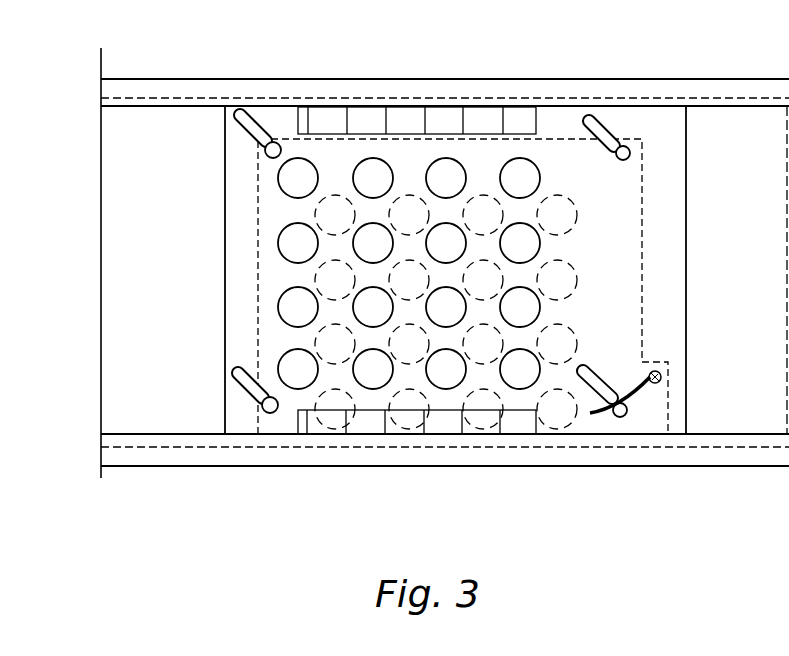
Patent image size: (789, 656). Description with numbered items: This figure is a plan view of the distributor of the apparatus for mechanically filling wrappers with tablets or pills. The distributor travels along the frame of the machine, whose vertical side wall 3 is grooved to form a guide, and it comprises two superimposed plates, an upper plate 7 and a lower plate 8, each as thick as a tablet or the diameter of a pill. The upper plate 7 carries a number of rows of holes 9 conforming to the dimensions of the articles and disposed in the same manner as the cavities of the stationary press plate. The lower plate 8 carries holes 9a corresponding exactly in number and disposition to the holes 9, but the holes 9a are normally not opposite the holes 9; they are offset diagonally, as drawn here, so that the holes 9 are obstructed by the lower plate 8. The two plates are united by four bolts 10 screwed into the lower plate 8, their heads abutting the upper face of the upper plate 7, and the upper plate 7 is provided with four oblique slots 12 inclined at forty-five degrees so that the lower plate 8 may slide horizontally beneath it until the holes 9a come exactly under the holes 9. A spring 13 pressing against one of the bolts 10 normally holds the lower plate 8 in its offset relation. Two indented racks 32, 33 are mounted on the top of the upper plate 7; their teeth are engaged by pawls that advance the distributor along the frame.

The vertical side wall 3 is at (738, 457).
The upper plate 7 is at (686, 302).
The lower plate 8 is at (642, 270).
The holes 9 is at (286, 178).
The holes 9a is at (567, 218).
The bolts 10 is at (624, 152).
The oblique slots 12 is at (597, 127).
The spring 13 is at (638, 387).
The indented rack 32 is at (478, 120).
The indented rack 33 is at (438, 430).